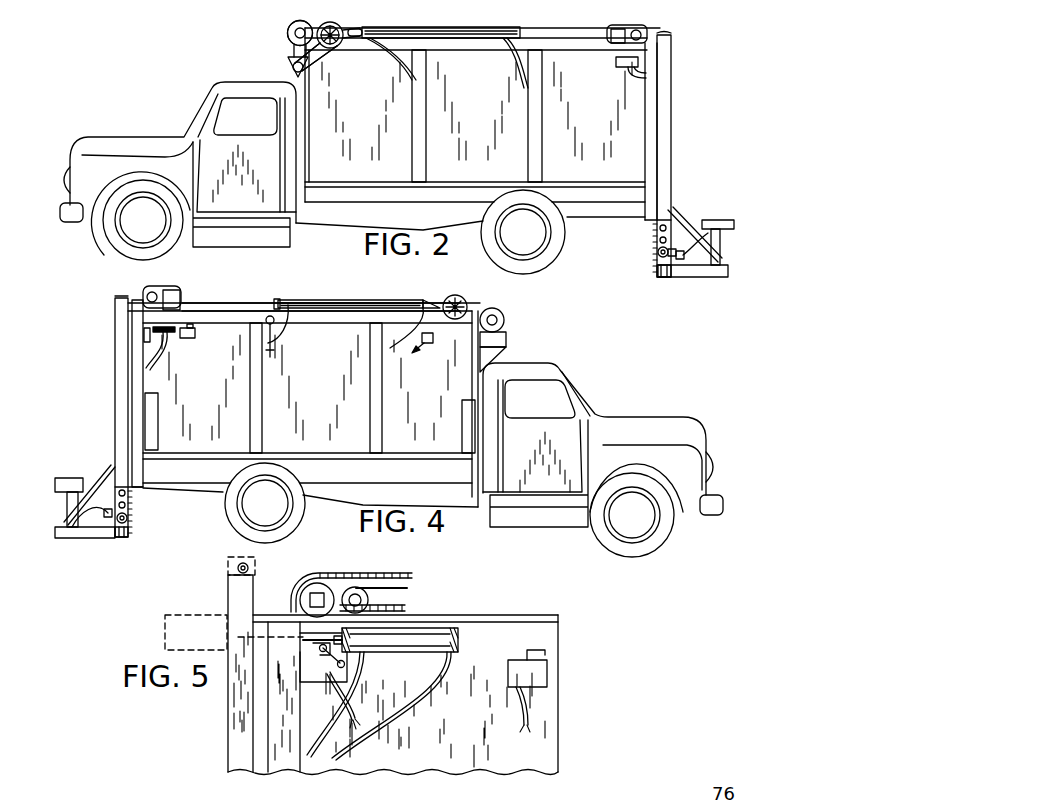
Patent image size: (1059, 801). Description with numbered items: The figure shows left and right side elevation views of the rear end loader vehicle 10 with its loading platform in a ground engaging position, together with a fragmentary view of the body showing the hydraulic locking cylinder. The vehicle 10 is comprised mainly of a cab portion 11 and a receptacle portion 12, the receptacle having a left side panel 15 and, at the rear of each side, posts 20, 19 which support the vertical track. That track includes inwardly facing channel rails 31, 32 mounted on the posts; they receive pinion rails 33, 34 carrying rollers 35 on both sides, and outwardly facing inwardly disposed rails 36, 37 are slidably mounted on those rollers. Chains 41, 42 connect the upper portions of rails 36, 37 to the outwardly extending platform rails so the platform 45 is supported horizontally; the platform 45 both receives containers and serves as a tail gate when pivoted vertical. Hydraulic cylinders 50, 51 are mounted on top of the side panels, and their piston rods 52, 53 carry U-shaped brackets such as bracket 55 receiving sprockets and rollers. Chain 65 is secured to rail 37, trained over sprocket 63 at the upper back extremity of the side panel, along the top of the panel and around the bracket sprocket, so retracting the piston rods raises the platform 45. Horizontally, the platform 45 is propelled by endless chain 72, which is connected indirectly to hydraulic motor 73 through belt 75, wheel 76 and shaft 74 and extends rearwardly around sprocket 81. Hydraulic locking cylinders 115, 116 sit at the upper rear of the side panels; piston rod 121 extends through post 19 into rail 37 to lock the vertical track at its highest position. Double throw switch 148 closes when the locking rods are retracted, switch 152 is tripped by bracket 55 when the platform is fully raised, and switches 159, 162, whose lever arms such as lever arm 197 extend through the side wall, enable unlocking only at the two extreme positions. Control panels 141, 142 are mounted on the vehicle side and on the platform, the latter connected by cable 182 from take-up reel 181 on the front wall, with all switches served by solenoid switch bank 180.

In FIG. 2, the rear end loader vehicle 10 is at (116, 128).
In FIG. 4, the rear end loader vehicle 10 is at (623, 403).
In FIG. 2, the cab portion 11 is at (214, 97).
In FIG. 4, the cab portion 11 is at (572, 378).
In FIG. 2, the receptacle portion 12 is at (576, 226).
In FIG. 4, the receptacle portion 12 is at (204, 495).
In FIG. 2, the left side panel 15 is at (606, 161).
In FIG. 4, the post 19 is at (140, 360).
In FIG. 5, the post 19 is at (277, 712).
In FIG. 2, the post 20 is at (647, 195).
In FIG. 2, the channel rail 31 is at (667, 141).
In FIG. 4, the channel rail 32 is at (118, 350).
In FIG. 5, the channel rail 32 is at (232, 703).
In FIG. 2, the pinion rail 33 is at (657, 233).
In FIG. 4, the pinion rail 34 is at (129, 512).
In FIG. 2, the rollers 35 is at (656, 256).
In FIG. 2, the rail 36 is at (657, 272).
In FIG. 4, the rail 37 is at (130, 529).
In FIG. 2, the chain 41 is at (676, 213).
In FIG. 4, the chain 42 is at (114, 471).
In FIG. 2, the platform 45 is at (738, 271).
In FIG. 4, the platform 45 is at (50, 537).
In FIG. 2, the hydraulic cylinder 50 is at (448, 29).
In FIG. 4, the hydraulic cylinder 51 is at (320, 302).
In FIG. 2, the piston rod 52 is at (570, 31).
In FIG. 4, the piston rod 53 is at (227, 303).
In FIG. 4, the U-shaped bracket 55 is at (180, 297).
In FIG. 5, the sprocket 63 is at (303, 590).
In FIG. 5, the chain 65 is at (324, 580).
In FIG. 5, the endless chain 72 is at (406, 589).
In FIG. 2, the hydraulic motor 73 is at (290, 68).
In FIG. 2, the shaft 74 is at (334, 25).
In FIG. 2, the belt 75 is at (331, 50).
In FIG. 2, the wheel 76 is at (306, 16).
In FIG. 4, the wheel 76 is at (458, 302).
In FIG. 5, the sprocket 81 is at (359, 592).
In FIG. 2, the hydraulic locking cylinder 115 is at (617, 59).
In FIG. 4, the hydraulic locking cylinder 116 is at (173, 334).
In FIG. 5, the hydraulic locking cylinder 116 is at (459, 643).
In FIG. 5, the piston rod 121 is at (310, 642).
In FIG. 2, the control panel 141 is at (716, 220).
In FIG. 4, the control panel 141 is at (63, 478).
In FIG. 4, the control panel 142 is at (154, 438).
In FIG. 5, the double throw switch 148 is at (309, 672).
In FIG. 4, the double throw switch 152 is at (282, 338).
In FIG. 4, the double throw switch 159 is at (197, 334).
In FIG. 5, the double throw switch 159 is at (508, 673).
In FIG. 4, the double throw switch 162 is at (427, 346).
In FIG. 4, the solenoid switch bank 180 is at (461, 433).
In FIG. 2, the take-up reel 181 is at (287, 41).
In FIG. 4, the take-up reel 181 is at (504, 322).
In FIG. 2, the connecting cable 182 is at (679, 260).
In FIG. 5, the lever arm 197 is at (527, 650).